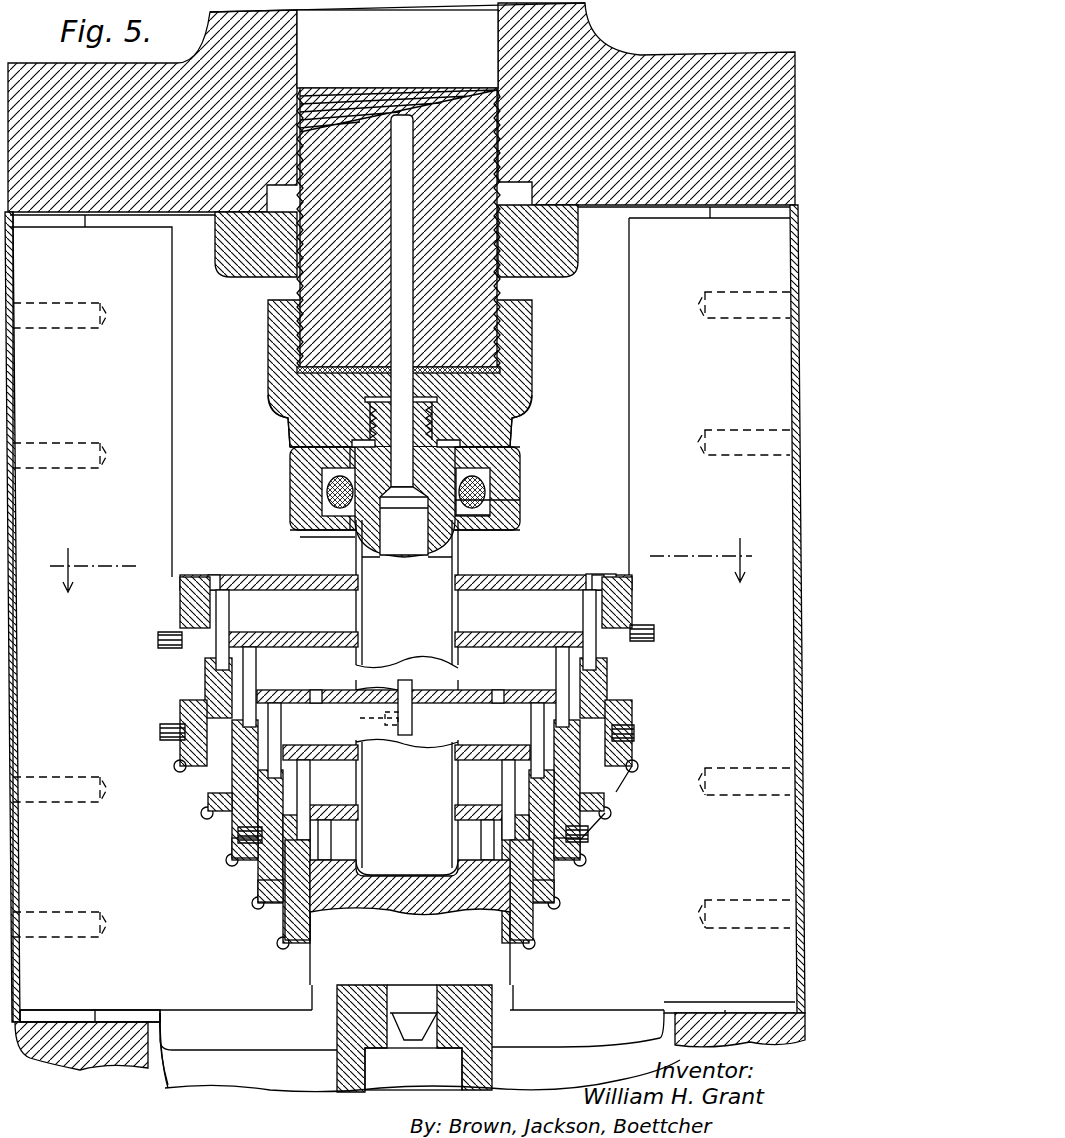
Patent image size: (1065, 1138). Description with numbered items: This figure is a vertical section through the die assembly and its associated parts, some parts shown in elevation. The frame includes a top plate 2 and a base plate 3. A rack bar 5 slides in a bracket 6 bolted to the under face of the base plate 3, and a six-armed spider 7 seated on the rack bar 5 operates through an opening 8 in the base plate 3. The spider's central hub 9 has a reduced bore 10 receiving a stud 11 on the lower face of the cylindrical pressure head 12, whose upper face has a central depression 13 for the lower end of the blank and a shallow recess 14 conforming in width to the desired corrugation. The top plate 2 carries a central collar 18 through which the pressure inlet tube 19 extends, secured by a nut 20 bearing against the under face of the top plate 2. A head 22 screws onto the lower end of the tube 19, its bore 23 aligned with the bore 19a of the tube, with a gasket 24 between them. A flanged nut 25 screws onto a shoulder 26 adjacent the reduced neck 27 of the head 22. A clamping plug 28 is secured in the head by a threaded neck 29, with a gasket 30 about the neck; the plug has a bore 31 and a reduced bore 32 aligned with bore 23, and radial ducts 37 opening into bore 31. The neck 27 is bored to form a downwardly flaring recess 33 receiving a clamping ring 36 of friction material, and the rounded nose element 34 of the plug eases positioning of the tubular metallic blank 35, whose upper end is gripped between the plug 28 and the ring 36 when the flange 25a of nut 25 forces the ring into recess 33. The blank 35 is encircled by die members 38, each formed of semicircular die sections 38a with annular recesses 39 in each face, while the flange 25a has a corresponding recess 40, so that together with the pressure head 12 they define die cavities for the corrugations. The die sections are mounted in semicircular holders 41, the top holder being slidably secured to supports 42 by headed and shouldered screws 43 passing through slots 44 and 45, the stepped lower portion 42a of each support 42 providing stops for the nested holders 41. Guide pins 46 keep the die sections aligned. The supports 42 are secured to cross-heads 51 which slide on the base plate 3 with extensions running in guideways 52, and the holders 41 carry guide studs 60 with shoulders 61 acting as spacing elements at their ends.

The top plate 2 is at (722, 70).
The base plate 3 is at (100, 1058).
The rack bar 5 is at (326, 1072).
The bracket 6 is at (399, 565).
The six-armed spider 7 is at (234, 1072).
The opening 8 is at (160, 1058).
The central hub 9 is at (476, 1012).
The reduced bore 10 is at (338, 1023).
The stud 11 is at (422, 997).
The cylindrical pressure head 12 is at (326, 968).
The central depression 13 is at (406, 878).
The shallow recess 14 is at (346, 866).
The central collar 18 is at (590, 10).
The pressure inlet tube 19 is at (397, 49).
The bore 19a is at (410, 118).
The nut 20 is at (234, 266).
The head 22 is at (286, 327).
The bore 23 is at (398, 384).
The gasket 24 is at (470, 378).
The flanged nut 25 is at (512, 480).
The flange 25a is at (500, 524).
The shoulder 26 is at (512, 442).
The reduced neck 27 is at (492, 470).
The clamping plug 28 is at (330, 463).
The reduced threaded neck 29 is at (345, 428).
The gasket 30 is at (460, 432).
The bore 31 is at (405, 548).
The reduced bore 32 is at (366, 405).
The downwardly flaring recess 33 is at (328, 492).
The nose element 34 is at (440, 540).
The tubular metallic blank 35 is at (358, 560).
The clamping ring 36 is at (482, 500).
The ducts 37 is at (356, 537).
The die members 38 is at (560, 570).
The semicircular die sections 38a is at (606, 558).
The annular recess 39 is at (468, 628).
The recess 40 is at (462, 530).
The semicircular holders 41 is at (626, 585).
The supports 42 is at (636, 452).
The lower portion of support 42a is at (598, 812).
The headed and shouldered screws 43 is at (178, 642).
The slot 44 is at (275, 880).
The slot 45 is at (262, 868).
The guide pins 46 is at (212, 603).
The cross-heads 51 is at (790, 360).
The guideways 52 is at (62, 1018).
The guide studs 60 is at (362, 718).
The shoulder 61 is at (403, 716).